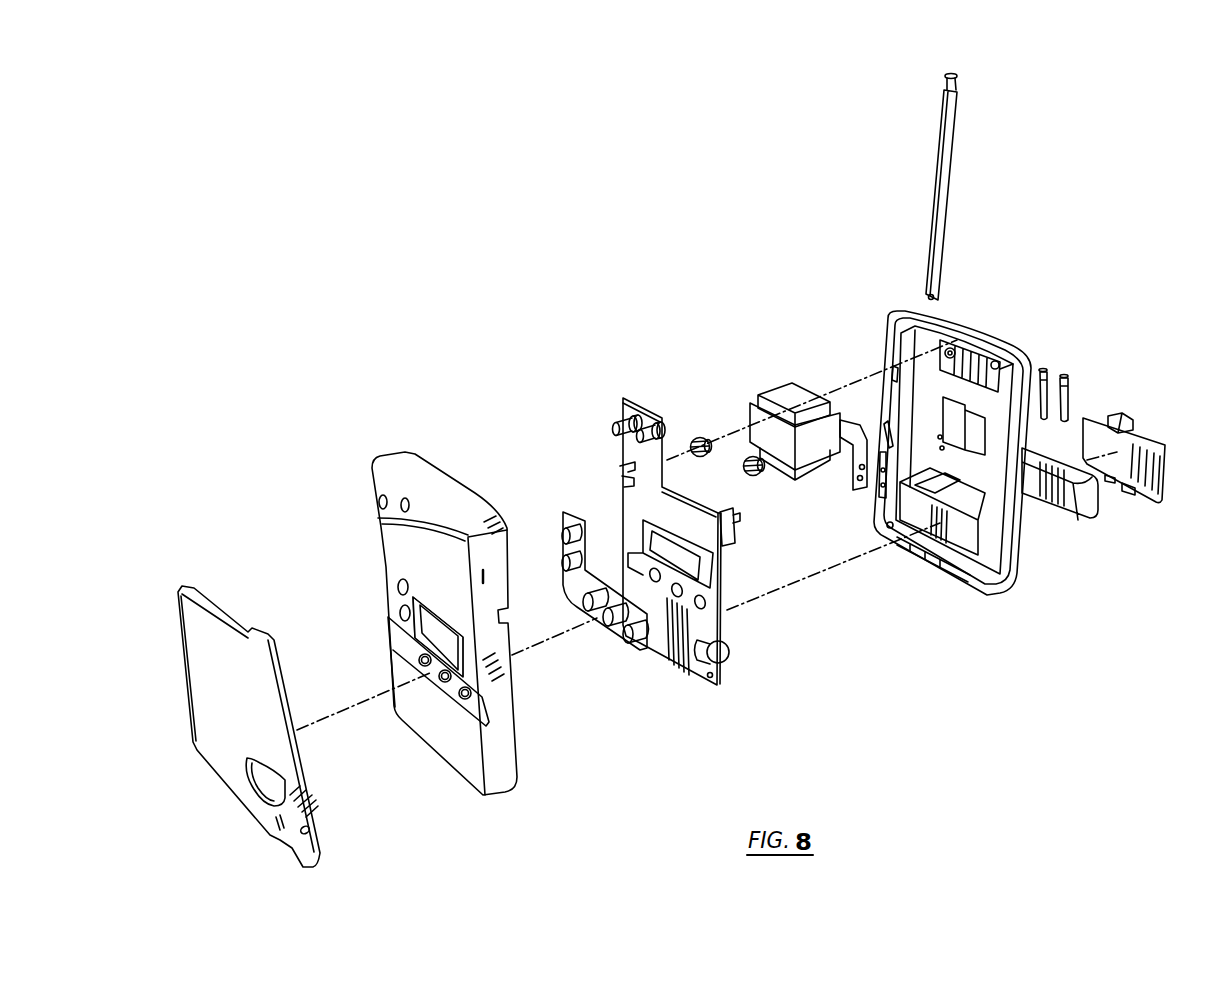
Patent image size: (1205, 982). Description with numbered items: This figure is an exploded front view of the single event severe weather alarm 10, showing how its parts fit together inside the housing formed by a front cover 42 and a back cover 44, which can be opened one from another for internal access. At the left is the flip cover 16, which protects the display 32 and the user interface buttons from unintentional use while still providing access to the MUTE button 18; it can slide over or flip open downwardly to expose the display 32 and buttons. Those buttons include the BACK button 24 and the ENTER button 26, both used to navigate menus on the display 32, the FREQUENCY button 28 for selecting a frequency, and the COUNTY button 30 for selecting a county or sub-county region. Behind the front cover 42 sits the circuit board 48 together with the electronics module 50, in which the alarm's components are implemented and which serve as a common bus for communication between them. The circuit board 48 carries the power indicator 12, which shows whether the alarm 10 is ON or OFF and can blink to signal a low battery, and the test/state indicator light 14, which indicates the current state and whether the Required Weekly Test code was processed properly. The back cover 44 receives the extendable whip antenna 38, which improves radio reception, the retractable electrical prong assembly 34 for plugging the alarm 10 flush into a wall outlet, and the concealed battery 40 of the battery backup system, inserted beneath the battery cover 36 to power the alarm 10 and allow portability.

The single event severe weather alarm 10 is at (372, 236).
The power indicator 12 is at (617, 422).
The test/state indicator light 14 is at (650, 417).
The flip cover 16 is at (217, 634).
The MUTE button 18 is at (633, 643).
The BACK button 24 is at (600, 624).
The ENTER button 26 is at (577, 603).
The FREQUENCY button 28 is at (562, 567).
The COUNTY button 30 is at (563, 527).
The display 32 is at (432, 628).
The retractable electrical prong assembly 34 is at (1073, 403).
The battery cover 36 is at (1147, 433).
The antenna 38 is at (945, 158).
The battery backup system 40 is at (1087, 513).
The front cover 42 is at (418, 470).
The back cover 44 is at (997, 567).
The circuit board 48 is at (682, 667).
The electronics module 50 is at (780, 393).